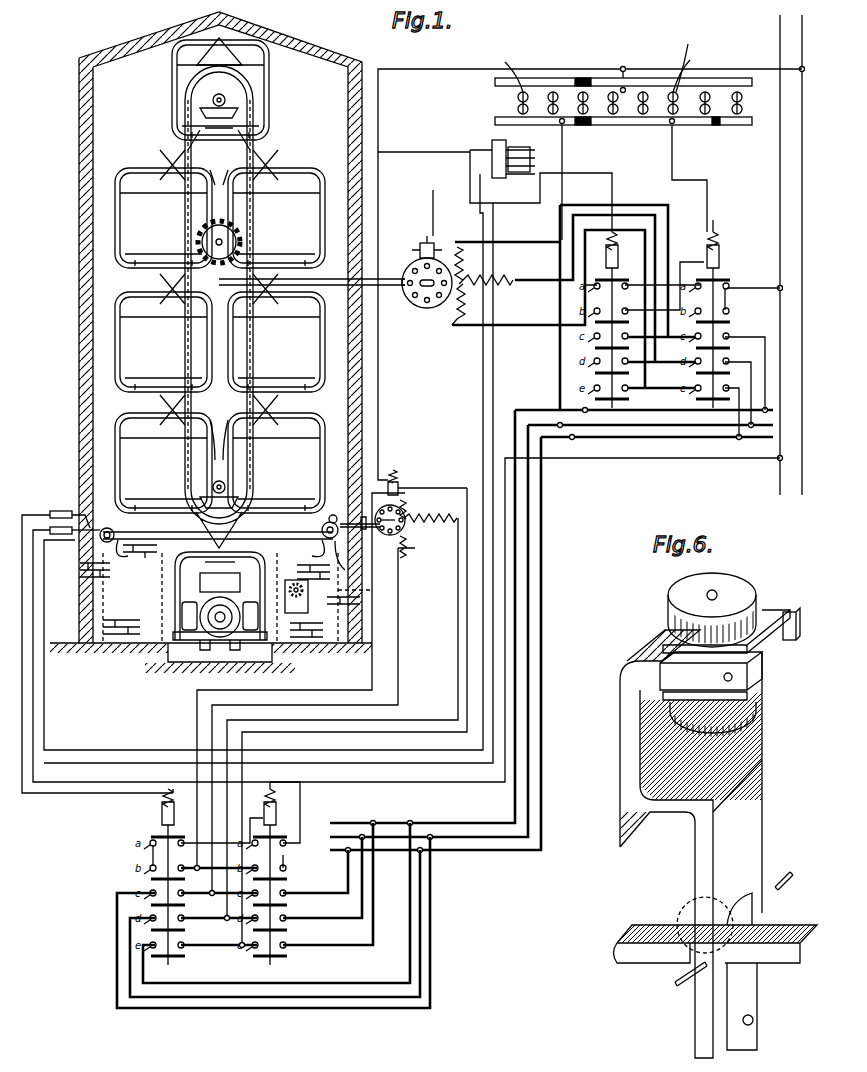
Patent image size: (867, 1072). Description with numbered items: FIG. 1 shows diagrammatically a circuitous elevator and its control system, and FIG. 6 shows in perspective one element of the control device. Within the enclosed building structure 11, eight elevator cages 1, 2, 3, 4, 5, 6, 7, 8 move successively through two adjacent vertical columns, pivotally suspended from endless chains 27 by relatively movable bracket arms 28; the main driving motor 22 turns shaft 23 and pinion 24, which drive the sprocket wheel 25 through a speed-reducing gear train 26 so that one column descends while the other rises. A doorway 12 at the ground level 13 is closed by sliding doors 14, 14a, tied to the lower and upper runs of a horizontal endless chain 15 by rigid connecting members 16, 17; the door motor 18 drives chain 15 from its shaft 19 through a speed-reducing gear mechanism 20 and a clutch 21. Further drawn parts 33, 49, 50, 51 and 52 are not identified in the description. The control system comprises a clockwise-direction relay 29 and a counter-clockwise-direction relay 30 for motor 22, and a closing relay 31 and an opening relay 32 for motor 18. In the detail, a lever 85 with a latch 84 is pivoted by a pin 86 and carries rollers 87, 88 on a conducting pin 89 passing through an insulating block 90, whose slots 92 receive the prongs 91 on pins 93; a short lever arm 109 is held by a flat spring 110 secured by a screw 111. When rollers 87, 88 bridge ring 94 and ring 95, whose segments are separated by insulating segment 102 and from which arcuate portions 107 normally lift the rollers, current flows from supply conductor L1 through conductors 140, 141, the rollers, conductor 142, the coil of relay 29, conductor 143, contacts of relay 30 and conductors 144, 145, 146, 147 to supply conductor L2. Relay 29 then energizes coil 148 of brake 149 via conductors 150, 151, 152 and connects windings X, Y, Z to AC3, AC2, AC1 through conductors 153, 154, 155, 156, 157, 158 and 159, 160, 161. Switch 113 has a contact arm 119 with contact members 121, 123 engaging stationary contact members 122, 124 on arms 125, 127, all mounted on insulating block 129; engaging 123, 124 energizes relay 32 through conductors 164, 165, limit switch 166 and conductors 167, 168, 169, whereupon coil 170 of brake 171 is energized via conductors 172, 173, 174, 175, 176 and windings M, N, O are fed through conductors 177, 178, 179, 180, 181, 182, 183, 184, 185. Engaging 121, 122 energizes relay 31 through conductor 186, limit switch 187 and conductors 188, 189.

In FIG. 1, the elevator cage 1 is at (262, 590).
In FIG. 1, the elevator cage 2 is at (285, 493).
In FIG. 1, the elevator cage 3 is at (285, 372).
In FIG. 1, the elevator cage 4 is at (285, 244).
In FIG. 1, the elevator cage 5 is at (256, 81).
In FIG. 1, the elevator cage 6 is at (150, 244).
In FIG. 1, the elevator cage 7 is at (150, 372).
In FIG. 1, the elevator cage 8 is at (148, 493).
In FIG. 1, the building structure 11 is at (298, 54).
In FIG. 1, the doorway 12 is at (172, 595).
In FIG. 1, the ground level 13 is at (64, 643).
In FIG. 1, the sliding door 14 is at (106, 528).
In FIG. 1, the sliding door 14a is at (370, 582).
In FIG. 1, the endless chain 15 is at (252, 532).
In FIG. 1, the rigid connecting member 16 is at (220, 591).
In FIG. 1, the rigid connecting member 17 is at (318, 554).
In FIG. 1, the door motor 18 is at (463, 515).
In FIG. 1, the motor shaft 19 is at (390, 531).
In FIG. 1, the speed-reducing gear mechanism 20 is at (343, 503).
In FIG. 1, the clutch 21 is at (347, 557).
In FIG. 1, the main driving motor 22 is at (428, 331).
In FIG. 1, the motor shaft 23 is at (384, 275).
In FIG. 1, the pinion 24 is at (217, 283).
In FIG. 1, the sprocket wheel 25 is at (217, 174).
In FIG. 1, the speed-reducing gear train 26 is at (232, 260).
In FIG. 1, the endless chains 27 is at (254, 140).
In FIG. 1, the bracket arms 28 is at (266, 172).
In FIG. 1, the clockwise-direction relay 29 is at (744, 250).
In FIG. 1, the counter-clockwise-direction relay 30 is at (604, 250).
In FIG. 1, the door-closing relay 31 is at (295, 821).
In FIG. 1, the door-opening relay 32 is at (192, 813).
In FIG. 1, the control box 33 is at (308, 592).
In FIG. 1, the lower pulley 49 is at (219, 485).
In FIG. 1, the upper pulley 50 is at (218, 98).
In FIG. 1, the hanger 51 is at (218, 431).
In FIG. 1, the hanger 52 is at (219, 146).
In FIG. 6, the latch 84 is at (620, 838).
In FIG. 6, the lever 85 is at (764, 830).
In FIG. 6, the pin 86 is at (675, 984).
In FIG. 1, the roller 87 is at (689, 59).
In FIG. 6, the roller 87 is at (710, 573).
In FIG. 1, the roller 88 is at (665, 125).
In FIG. 6, the roller 88 is at (752, 724).
In FIG. 1, the electrically conducting pin 89 is at (598, 68).
In FIG. 6, the electrically conducting pin 89 is at (718, 594).
In FIG. 6, the insulating block 90 is at (784, 608).
In FIG. 6, the prongs 91 is at (795, 612).
In FIG. 6, the grooves 92 is at (762, 662).
In FIG. 6, the pins 93 is at (723, 678).
In FIG. 1, the ring 94 is at (650, 78).
In FIG. 1, the ring 95 is at (512, 110).
In FIG. 1, the insulating segment 102 is at (714, 126).
In FIG. 1, the arcuate portions 107 is at (575, 78).
In FIG. 6, the short lever arm 109 is at (648, 925).
In FIG. 6, the flat spring 110 is at (758, 998).
In FIG. 6, the screw 111 is at (754, 1022).
In FIG. 1, the switch 113 is at (507, 152).
In FIG. 1, the contact arm 119 is at (505, 173).
In FIG. 1, the contact member 121 is at (536, 166).
In FIG. 1, the stationary contact member 122 is at (536, 174).
In FIG. 1, the contact member 123 is at (536, 158).
In FIG. 1, the stationary contact member 124 is at (536, 150).
In FIG. 1, the contact arm 125 is at (530, 172).
In FIG. 1, the contact arm 127 is at (494, 140).
In FIG. 1, the insulating block 129 is at (527, 180).
In FIG. 1, the conductor 140 is at (738, 69).
In FIG. 1, the conductor 141 is at (620, 68).
In FIG. 1, the conductor 142 is at (675, 172).
In FIG. 1, the conductor 143 is at (707, 232).
In FIG. 1, the conductor 144 is at (588, 290).
In FIG. 1, the conductor 145 is at (657, 292).
In FIG. 1, the conductor 146 is at (728, 305).
In FIG. 1, the conductor 147 is at (740, 288).
In FIG. 1, the brake coil 148 is at (430, 240).
In FIG. 1, the magnet-type brake 149 is at (460, 236).
In FIG. 1, the conductor 150 is at (420, 248).
In FIG. 1, the conductor 151 is at (433, 200).
In FIG. 1, the conductor 152 is at (680, 312).
In FIG. 1, the conductor 153 is at (737, 338).
In FIG. 1, the conductor 154 is at (690, 338).
In FIG. 1, the conductor 155 is at (562, 240).
In FIG. 1, the conductor 156 is at (727, 364).
In FIG. 1, the conductor 157 is at (700, 364).
In FIG. 1, the conductor 158 is at (573, 280).
In FIG. 1, the conductor 159 is at (740, 403).
In FIG. 1, the conductor 160 is at (576, 318).
In FIG. 1, the conductor 161 is at (648, 379).
In FIG. 1, the conductor 164 is at (388, 152).
In FIG. 1, the conductor 165 is at (468, 164).
In FIG. 1, the limit switch 166 is at (67, 508).
In FIG. 1, the conductor 167 is at (75, 798).
In FIG. 1, the conductor 168 is at (165, 825).
In FIG. 1, the conductor 169 is at (660, 460).
In FIG. 1, the brake coil 170 is at (393, 470).
In FIG. 1, the magnet-type brake 171 is at (404, 484).
In FIG. 1, the conductor 172 is at (372, 670).
In FIG. 1, the conductor 173 is at (219, 878).
In FIG. 1, the conductor 174 is at (145, 860).
In FIG. 1, the conductor 175 is at (236, 860).
In FIG. 1, the conductor 176 is at (288, 868).
In FIG. 1, the conductor 177 is at (432, 935).
In FIG. 1, the conductor 178 is at (215, 894).
In FIG. 1, the conductor 179 is at (398, 698).
In FIG. 1, the conductor 180 is at (420, 920).
In FIG. 1, the conductor 181 is at (215, 919).
In FIG. 1, the conductor 182 is at (415, 722).
In FIG. 1, the conductor 183 is at (410, 925).
In FIG. 1, the conductor 184 is at (225, 948).
In FIG. 1, the conductor 185 is at (430, 488).
In FIG. 1, the conductor 186 is at (518, 218).
In FIG. 1, the limit switch 187 is at (72, 548).
In FIG. 1, the conductor 188 is at (140, 787).
In FIG. 1, the conductor 189 is at (150, 832).
In FIG. 1, the supply conductor AC1 is at (535, 520).
In FIG. 1, the supply conductor AC2 is at (535, 538).
In FIG. 1, the supply conductor AC3 is at (535, 558).
In FIG. 1, the supply conductor L1 is at (813, 255).
In FIG. 1, the supply conductor L2 is at (778, 36).